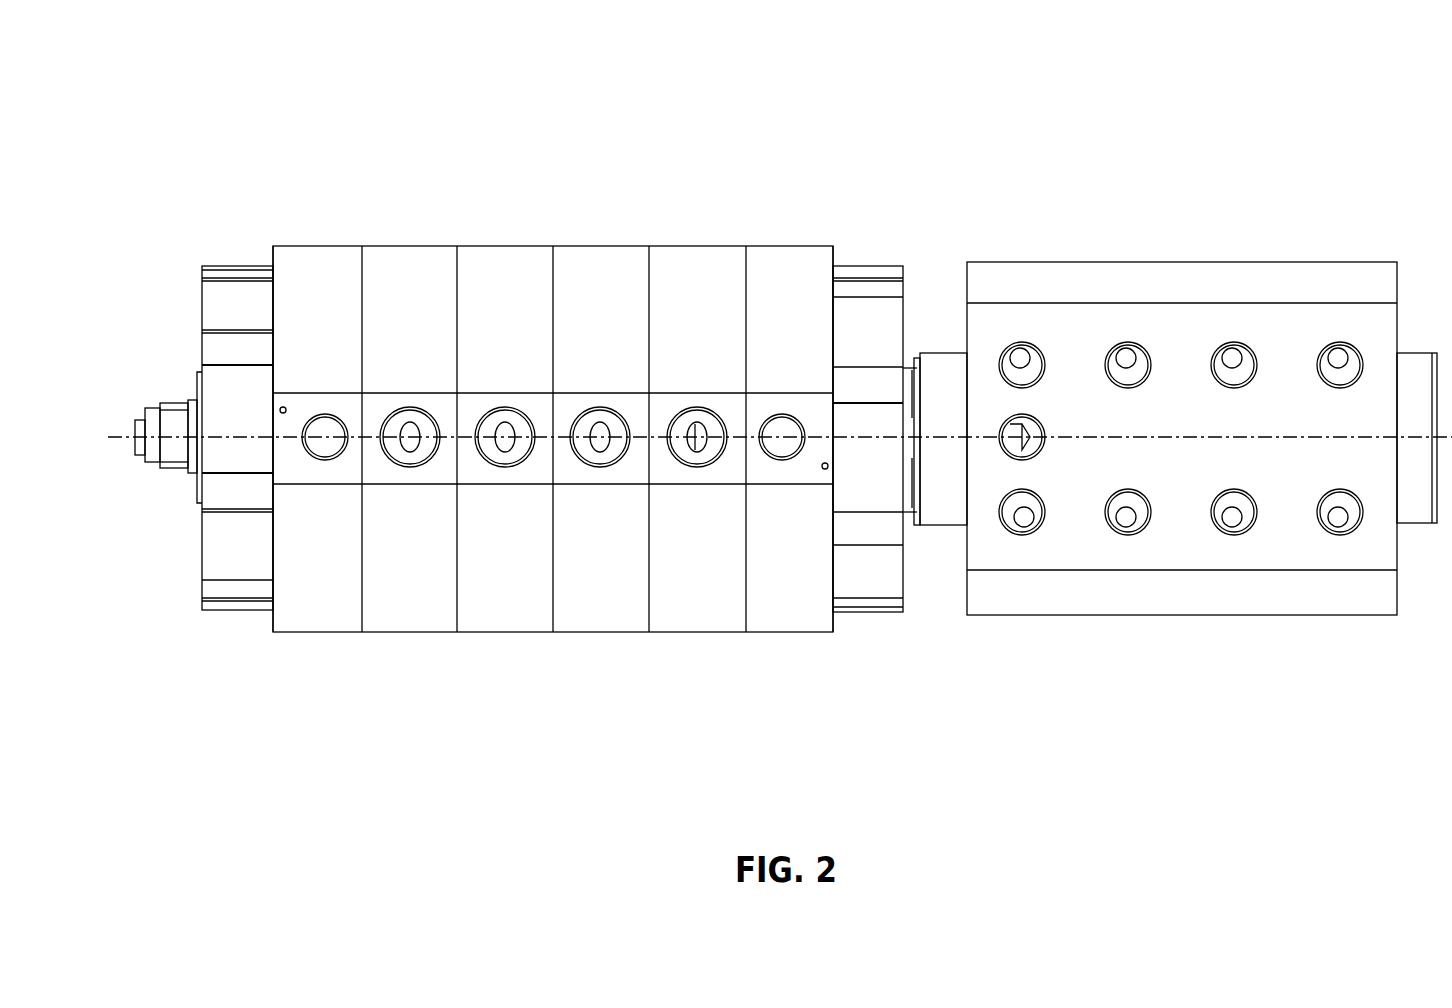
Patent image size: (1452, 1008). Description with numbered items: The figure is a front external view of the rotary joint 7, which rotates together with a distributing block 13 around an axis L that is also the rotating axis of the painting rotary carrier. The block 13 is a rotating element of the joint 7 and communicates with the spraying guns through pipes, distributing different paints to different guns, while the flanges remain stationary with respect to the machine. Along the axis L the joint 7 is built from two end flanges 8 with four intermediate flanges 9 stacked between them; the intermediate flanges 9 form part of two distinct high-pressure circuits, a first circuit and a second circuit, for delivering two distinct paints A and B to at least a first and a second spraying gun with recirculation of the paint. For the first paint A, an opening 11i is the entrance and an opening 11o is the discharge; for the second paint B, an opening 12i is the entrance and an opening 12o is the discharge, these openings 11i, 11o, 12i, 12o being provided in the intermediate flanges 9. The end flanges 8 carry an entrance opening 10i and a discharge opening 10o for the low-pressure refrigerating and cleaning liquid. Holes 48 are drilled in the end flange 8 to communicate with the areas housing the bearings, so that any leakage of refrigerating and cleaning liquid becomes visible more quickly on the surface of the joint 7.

The rotary joint 7 is at (206, 192).
The end flange 8 is at (318, 605).
The intermediate flange 9 is at (410, 605).
The discharge opening 10o is at (318, 452).
The entrance opening 10i is at (790, 453).
The discharge opening for first paint A 11o is at (393, 450).
The entrance opening for first paint A 11i is at (706, 452).
The discharge opening for second paint B 12o is at (492, 455).
The entrance opening for second paint B 12i is at (585, 452).
The distributing block 13 is at (1295, 553).
The holes 48 is at (281, 408).
The axis L is at (1437, 450).